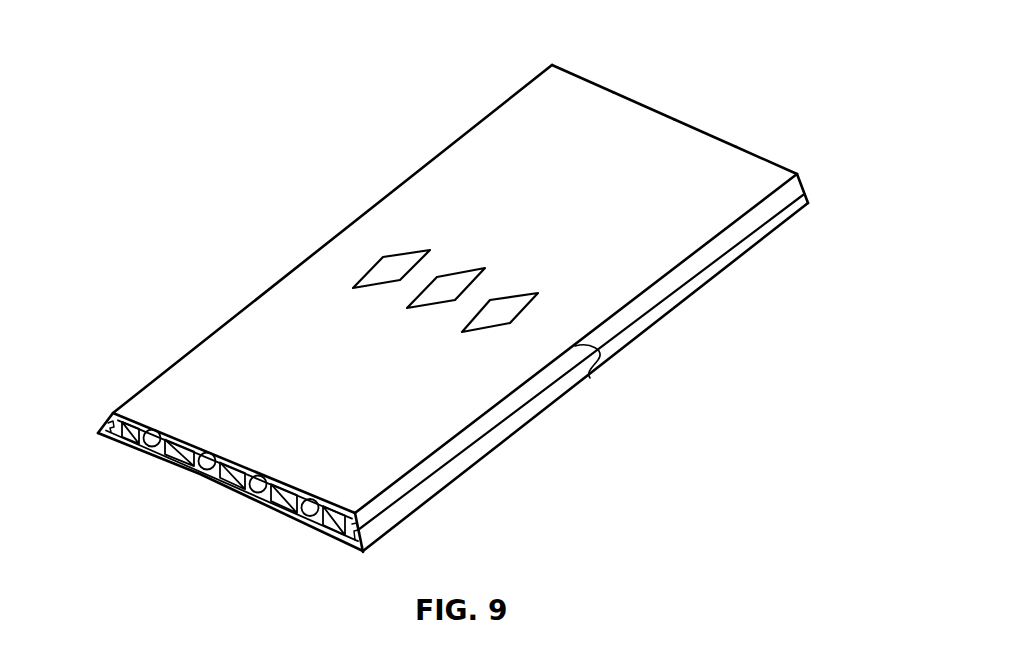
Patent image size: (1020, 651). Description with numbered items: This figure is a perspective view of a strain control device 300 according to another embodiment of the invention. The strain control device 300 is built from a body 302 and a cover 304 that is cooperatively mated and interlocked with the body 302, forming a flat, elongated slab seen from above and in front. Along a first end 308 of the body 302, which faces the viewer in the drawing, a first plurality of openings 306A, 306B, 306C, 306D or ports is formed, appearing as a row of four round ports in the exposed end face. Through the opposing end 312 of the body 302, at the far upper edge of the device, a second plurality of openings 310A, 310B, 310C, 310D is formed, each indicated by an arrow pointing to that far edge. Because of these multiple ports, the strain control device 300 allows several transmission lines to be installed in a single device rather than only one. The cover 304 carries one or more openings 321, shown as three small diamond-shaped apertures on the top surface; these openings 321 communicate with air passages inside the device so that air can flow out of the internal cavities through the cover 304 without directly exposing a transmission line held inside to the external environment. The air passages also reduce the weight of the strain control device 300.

The strain control device 300 is at (268, 197).
The body 302 is at (543, 408).
The cover 304 is at (590, 378).
The opening 306A is at (140, 446).
The opening 306B is at (197, 470).
The opening 306C is at (250, 494).
The opening 306D is at (300, 514).
The first end 308 is at (132, 449).
The opening 310A is at (588, 78).
The opening 310B is at (646, 103).
The opening 310C is at (702, 127).
The opening 310D is at (772, 158).
The opposing end 312 is at (802, 180).
The openings 321 is at (507, 293).